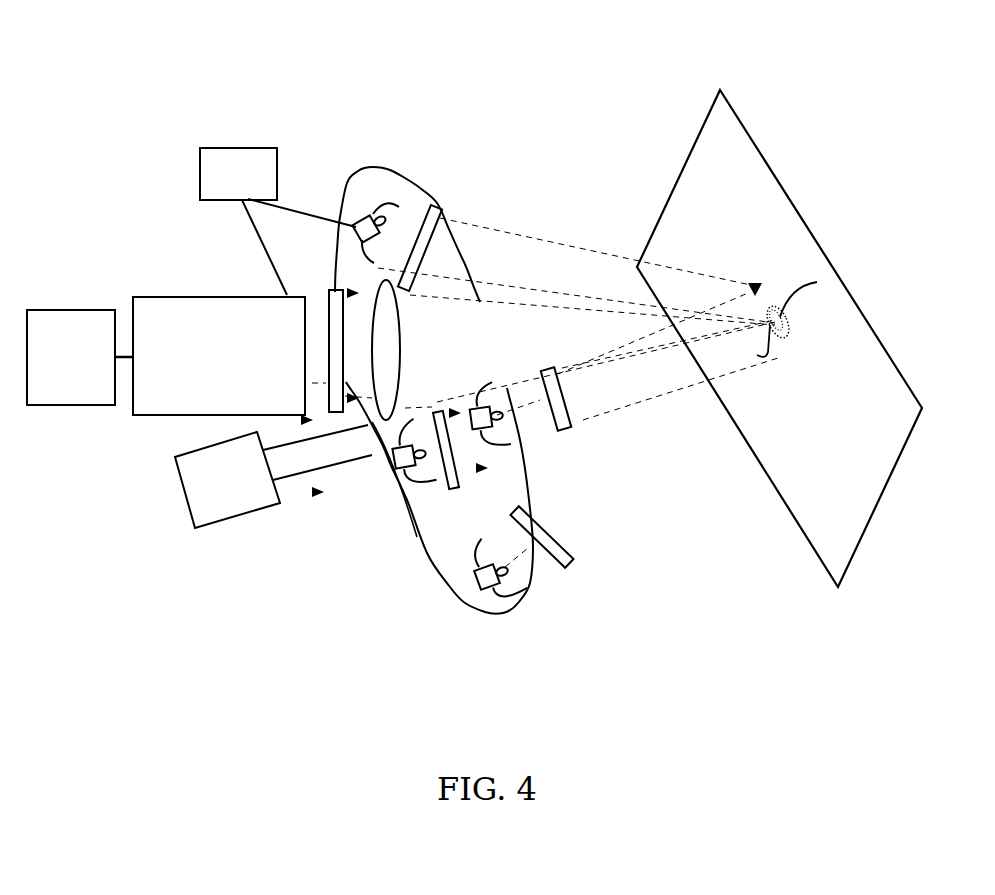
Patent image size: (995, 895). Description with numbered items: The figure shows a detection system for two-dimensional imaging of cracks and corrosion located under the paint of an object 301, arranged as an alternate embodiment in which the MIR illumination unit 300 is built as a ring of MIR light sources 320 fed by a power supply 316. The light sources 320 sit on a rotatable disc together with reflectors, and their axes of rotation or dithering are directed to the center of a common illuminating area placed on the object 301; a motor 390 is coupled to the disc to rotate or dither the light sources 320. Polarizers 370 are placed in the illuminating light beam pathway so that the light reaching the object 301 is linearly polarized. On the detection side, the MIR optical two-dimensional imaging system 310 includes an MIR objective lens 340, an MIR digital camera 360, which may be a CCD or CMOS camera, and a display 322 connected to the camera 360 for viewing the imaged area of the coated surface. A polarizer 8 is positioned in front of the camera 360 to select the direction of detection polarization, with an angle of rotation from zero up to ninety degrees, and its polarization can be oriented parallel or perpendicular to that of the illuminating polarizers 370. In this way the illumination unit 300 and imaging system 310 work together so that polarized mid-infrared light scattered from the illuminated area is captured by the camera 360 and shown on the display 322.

The MIR illumination unit 300 is at (522, 112).
The MIR optical 2-D imaging system 310 is at (203, 86).
The power supply 316 is at (278, 221).
The display 322 is at (80, 357).
The MIR digital camera 360 is at (219, 356).
The motor 390 is at (273, 476).
The polarizer 8 is at (328, 291).
The MIR objective lens 340 is at (400, 330).
The MIR light sources 320 is at (373, 212).
The polarizers 370 is at (437, 206).
The object 301 is at (802, 330).